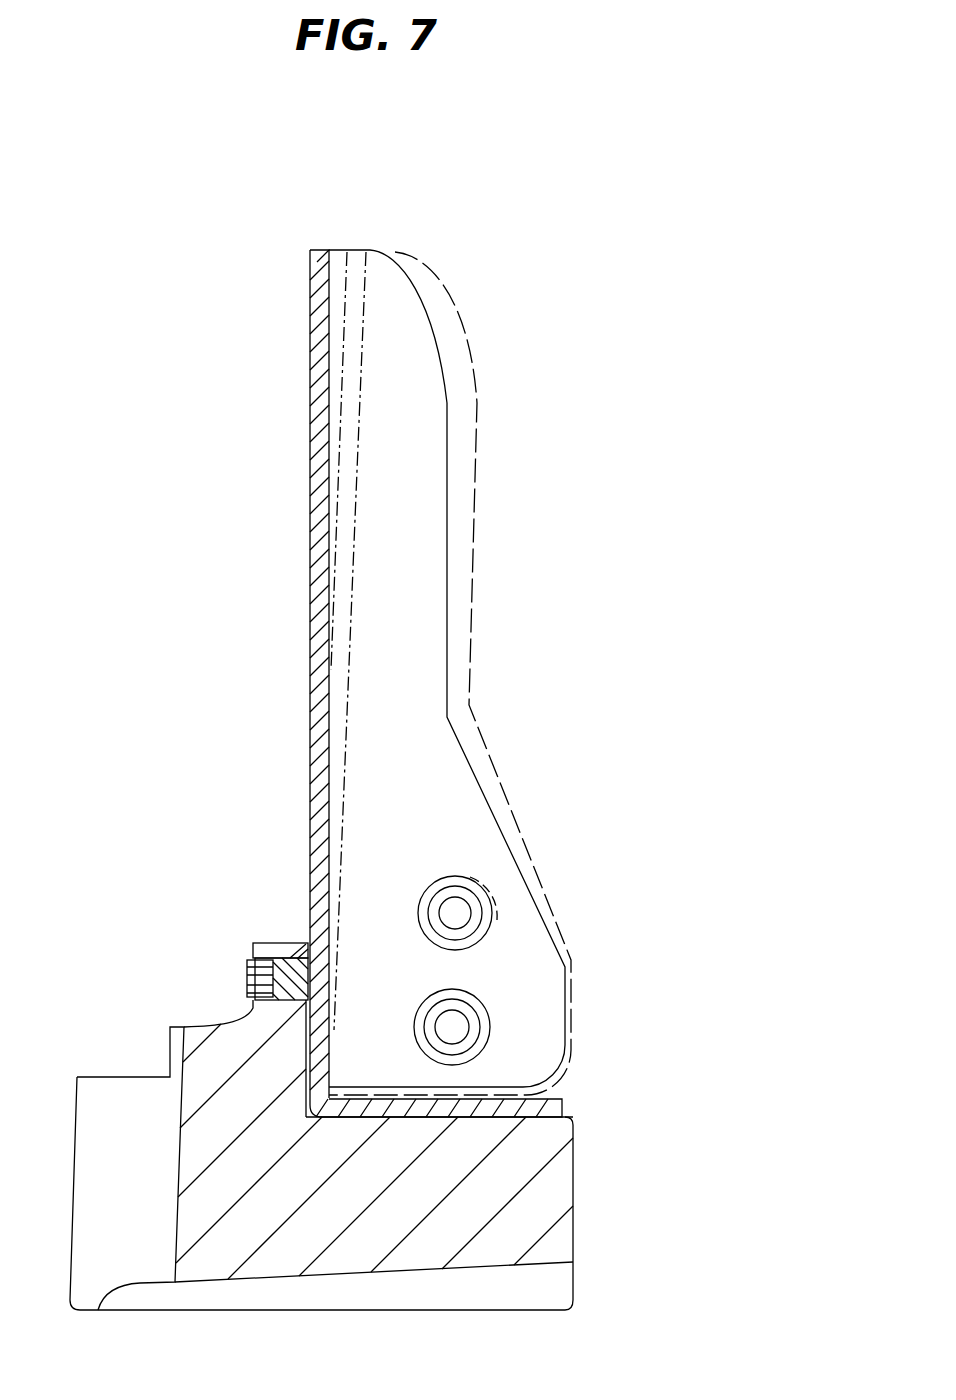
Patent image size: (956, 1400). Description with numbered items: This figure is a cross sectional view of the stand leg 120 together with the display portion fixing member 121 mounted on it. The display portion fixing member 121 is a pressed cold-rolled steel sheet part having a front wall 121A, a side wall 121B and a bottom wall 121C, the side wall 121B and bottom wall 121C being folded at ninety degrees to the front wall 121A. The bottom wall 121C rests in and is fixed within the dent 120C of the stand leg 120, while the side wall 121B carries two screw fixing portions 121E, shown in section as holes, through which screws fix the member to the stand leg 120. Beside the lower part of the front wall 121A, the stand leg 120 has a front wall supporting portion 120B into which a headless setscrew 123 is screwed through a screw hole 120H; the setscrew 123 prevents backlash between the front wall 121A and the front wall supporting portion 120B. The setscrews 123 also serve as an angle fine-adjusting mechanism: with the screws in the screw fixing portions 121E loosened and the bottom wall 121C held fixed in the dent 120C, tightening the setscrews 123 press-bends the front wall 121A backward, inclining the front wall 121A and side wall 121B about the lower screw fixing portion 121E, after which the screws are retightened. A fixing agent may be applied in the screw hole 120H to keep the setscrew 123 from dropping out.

The stand leg 120 is at (558, 1247).
The front wall supporting portion 120B is at (256, 943).
The dent 120C is at (567, 1112).
The screw hole 120H is at (250, 1010).
The display portion fixing member 121 is at (418, 632).
The front wall 121A is at (313, 406).
The side wall 121B is at (443, 405).
The bottom wall 121C is at (552, 1097).
The screw fixing portion 121E is at (480, 913).
The setscrew 123 is at (247, 980).